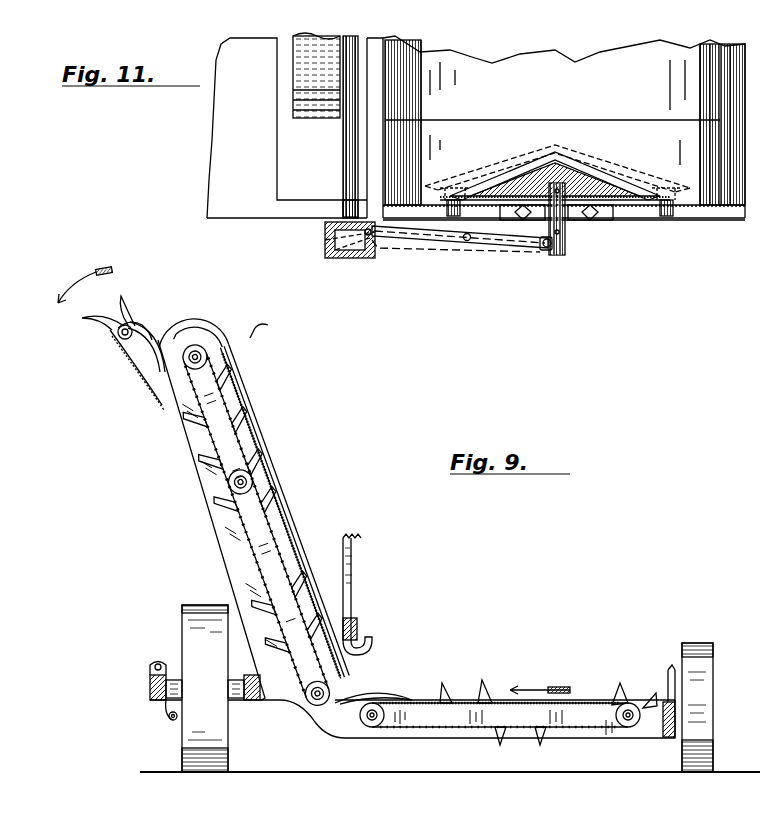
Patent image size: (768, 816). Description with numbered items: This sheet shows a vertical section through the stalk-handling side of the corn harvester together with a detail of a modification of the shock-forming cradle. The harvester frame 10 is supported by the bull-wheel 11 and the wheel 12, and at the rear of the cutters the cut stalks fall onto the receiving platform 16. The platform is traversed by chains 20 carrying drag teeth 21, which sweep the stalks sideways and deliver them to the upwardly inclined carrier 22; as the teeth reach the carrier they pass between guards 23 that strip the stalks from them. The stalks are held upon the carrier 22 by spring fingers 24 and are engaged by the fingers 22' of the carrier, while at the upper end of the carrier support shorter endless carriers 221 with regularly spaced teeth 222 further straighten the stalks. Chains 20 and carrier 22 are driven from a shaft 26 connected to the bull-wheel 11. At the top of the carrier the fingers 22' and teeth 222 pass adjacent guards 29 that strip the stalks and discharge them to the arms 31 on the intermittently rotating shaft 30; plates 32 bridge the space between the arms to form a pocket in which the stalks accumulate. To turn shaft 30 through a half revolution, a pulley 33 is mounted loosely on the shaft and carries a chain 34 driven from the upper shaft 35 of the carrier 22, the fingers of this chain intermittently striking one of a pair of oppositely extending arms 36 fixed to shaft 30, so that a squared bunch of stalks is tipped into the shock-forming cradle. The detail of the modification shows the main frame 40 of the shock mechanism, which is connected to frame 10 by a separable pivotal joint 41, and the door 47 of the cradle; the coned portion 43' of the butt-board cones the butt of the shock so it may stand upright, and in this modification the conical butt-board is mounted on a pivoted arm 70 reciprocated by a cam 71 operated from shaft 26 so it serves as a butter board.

In FIG. 11, the harvester frame 10 is at (228, 150).
In FIG. 9, the harvester frame 10 is at (612, 740).
In FIG. 11, the bull-wheel 11 is at (328, 118).
In FIG. 9, the bull-wheel 11 is at (200, 604).
In FIG. 9, the wheel 12 is at (697, 645).
In FIG. 9, the receiving platform 16 is at (598, 702).
In FIG. 9, the chains 20 is at (443, 730).
In FIG. 9, the drag teeth 21 is at (486, 700).
In FIG. 9, the upwardly inclined carrier 22 is at (292, 512).
In FIG. 9, the fingers of the carrier 22' is at (312, 520).
In FIG. 9, the shorter endless carriers 221 is at (245, 415).
In FIG. 9, the teeth 222 is at (232, 404).
In FIG. 9, the guards 23 is at (380, 690).
In FIG. 9, the spring fingers 24 is at (300, 528).
In FIG. 9, the shaft 26 is at (168, 720).
In FIG. 9, the guards 29 is at (200, 322).
In FIG. 9, the intermittently rotating shaft 30 is at (120, 336).
In FIG. 9, the arms 31 is at (98, 322).
In FIG. 9, the plates 32 is at (150, 340).
In FIG. 9, the pulley 33 is at (140, 318).
In FIG. 9, the chain 34 is at (165, 410).
In FIG. 9, the upper shaft 35 is at (205, 352).
In FIG. 9, the arms 36 is at (138, 308).
In FIG. 11, the main frame 40 is at (692, 220).
In FIG. 9, the separable pivotal joint 41 is at (150, 666).
In FIG. 11, the coned portion of the butt-board 43' is at (557, 165).
In FIG. 11, the door 47 is at (552, 99).
In FIG. 11, the pivoted arm 70 is at (537, 255).
In FIG. 11, the cam 71 is at (372, 256).